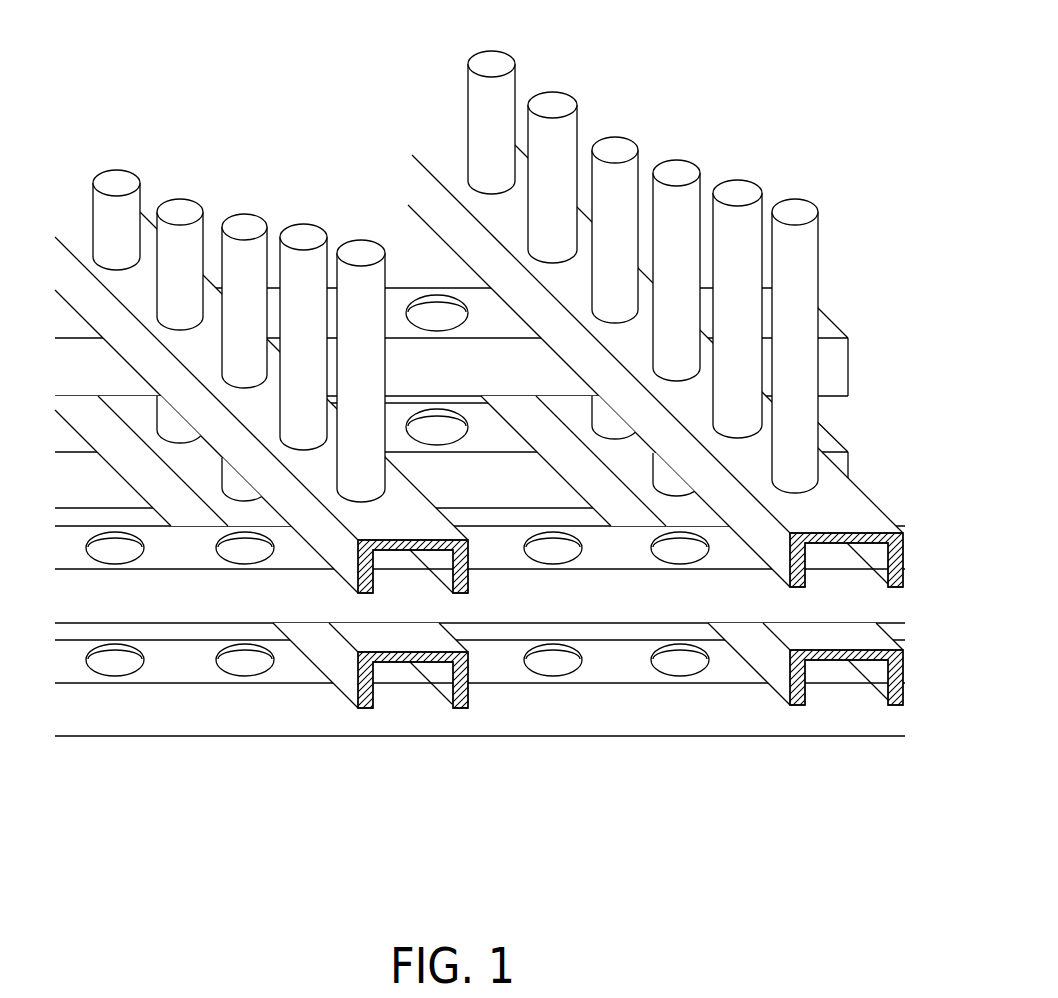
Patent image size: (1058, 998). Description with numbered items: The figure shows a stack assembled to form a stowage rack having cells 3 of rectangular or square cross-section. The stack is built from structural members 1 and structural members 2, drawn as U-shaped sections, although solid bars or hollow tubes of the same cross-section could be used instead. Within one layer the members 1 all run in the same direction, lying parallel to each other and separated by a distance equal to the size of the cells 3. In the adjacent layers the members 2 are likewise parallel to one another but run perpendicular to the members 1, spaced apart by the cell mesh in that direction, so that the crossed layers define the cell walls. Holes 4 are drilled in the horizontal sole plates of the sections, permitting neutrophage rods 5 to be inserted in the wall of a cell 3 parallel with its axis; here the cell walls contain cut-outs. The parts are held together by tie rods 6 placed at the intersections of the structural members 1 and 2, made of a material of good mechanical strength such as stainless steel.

The structural member 1 is at (480, 293).
The structural member 2 is at (345, 556).
The cell 3 is at (74, 501).
The hole 4 is at (546, 561).
The neutrophage rod 5 is at (495, 57).
The tie rod 6 is at (565, 101).